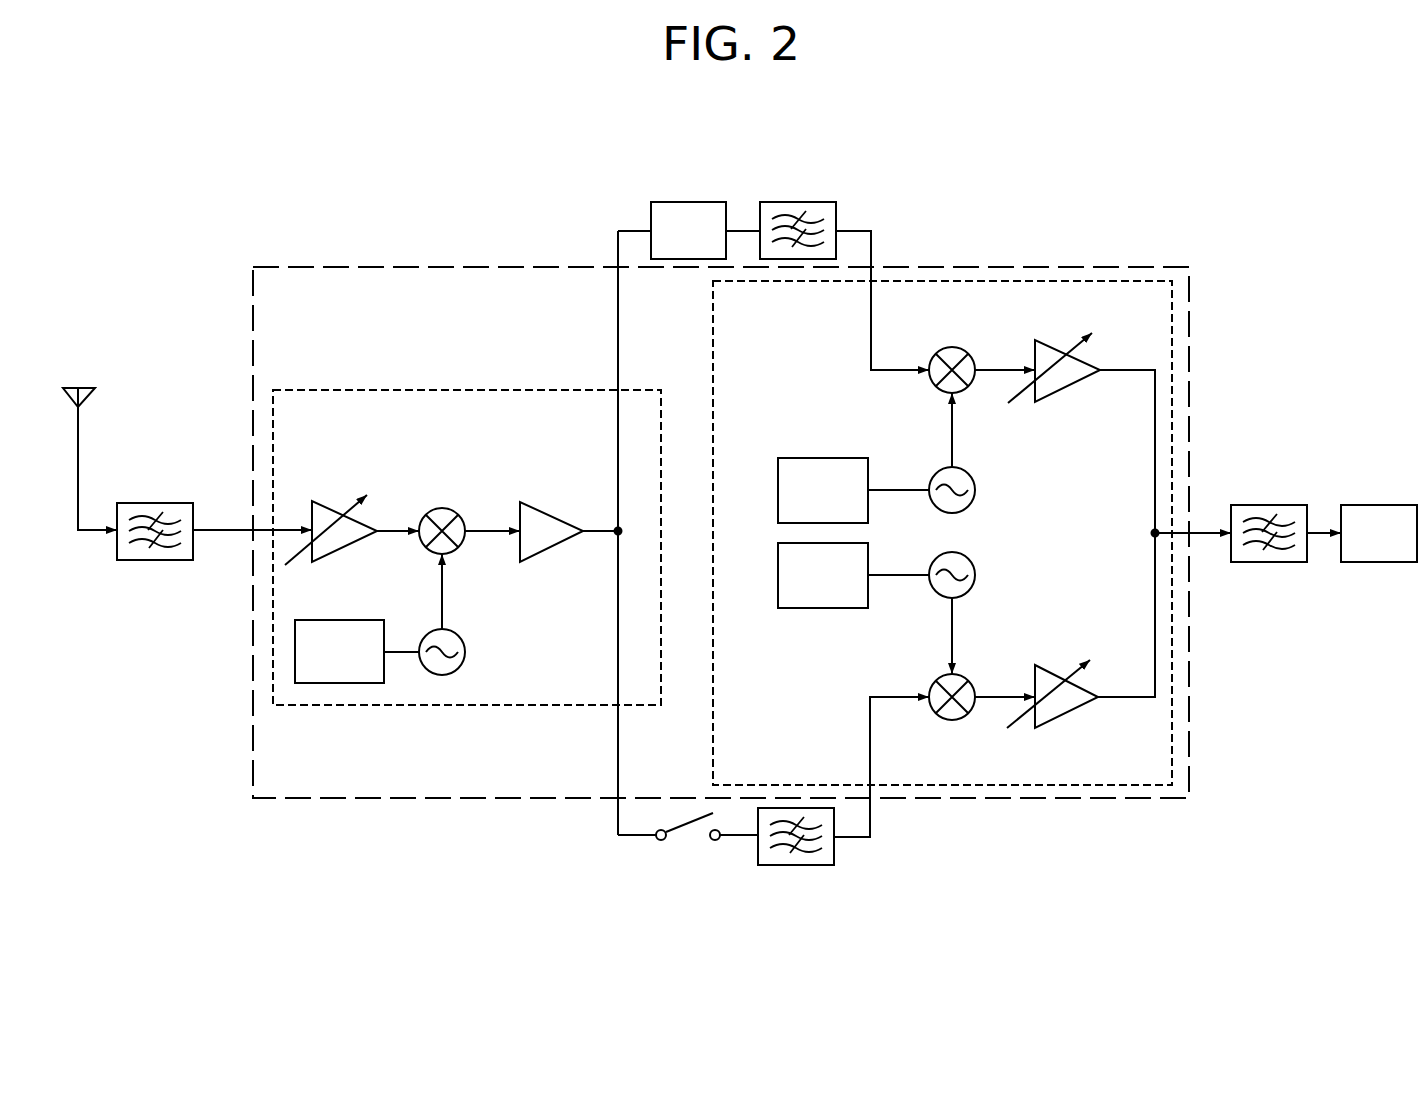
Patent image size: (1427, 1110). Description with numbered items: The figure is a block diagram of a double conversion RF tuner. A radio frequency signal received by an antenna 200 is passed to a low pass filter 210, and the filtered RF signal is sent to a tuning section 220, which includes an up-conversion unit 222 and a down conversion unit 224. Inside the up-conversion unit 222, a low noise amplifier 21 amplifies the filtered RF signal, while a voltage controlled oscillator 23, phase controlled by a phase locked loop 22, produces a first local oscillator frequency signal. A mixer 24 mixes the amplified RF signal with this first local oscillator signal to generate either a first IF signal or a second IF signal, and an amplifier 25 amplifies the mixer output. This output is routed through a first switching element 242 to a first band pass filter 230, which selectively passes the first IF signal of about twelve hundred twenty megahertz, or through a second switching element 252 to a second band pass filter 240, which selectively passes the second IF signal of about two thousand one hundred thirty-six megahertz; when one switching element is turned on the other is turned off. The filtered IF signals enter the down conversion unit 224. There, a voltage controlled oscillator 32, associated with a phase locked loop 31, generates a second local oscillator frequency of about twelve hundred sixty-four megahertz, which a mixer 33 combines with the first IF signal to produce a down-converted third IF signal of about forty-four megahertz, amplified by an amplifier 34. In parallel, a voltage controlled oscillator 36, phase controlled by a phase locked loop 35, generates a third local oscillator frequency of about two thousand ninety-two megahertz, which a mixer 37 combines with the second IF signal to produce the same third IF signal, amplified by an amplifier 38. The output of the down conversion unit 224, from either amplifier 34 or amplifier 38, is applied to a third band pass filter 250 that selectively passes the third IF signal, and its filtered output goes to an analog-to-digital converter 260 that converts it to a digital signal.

The antenna 200 is at (87, 385).
The low pass filter 210 is at (178, 503).
The tuning section 220 is at (1165, 268).
The up-conversion unit 222 is at (508, 390).
The down conversion unit 224 is at (713, 363).
The low noise amplifier 21 is at (323, 503).
The phase locked loop 22 is at (363, 620).
The voltage controlled oscillator 23 is at (452, 630).
The mixer 24 is at (452, 508).
The amplifier 25 is at (548, 510).
The first switching element 242 is at (668, 202).
The first band pass filter 230 is at (836, 218).
The second band pass filter 240 is at (835, 850).
The second switching element 252 is at (690, 825).
The phase locked loop 31 is at (792, 457).
The voltage controlled oscillator 32 is at (963, 467).
The mixer 33 is at (963, 347).
The amplifier 34 is at (1047, 340).
The phase locked loop 35 is at (792, 608).
The voltage controlled oscillator 36 is at (960, 600).
The mixer 37 is at (968, 717).
The amplifier 38 is at (1047, 728).
The third band pass filter 250 is at (1290, 505).
The analog-to-digital converter 260 is at (1390, 505).